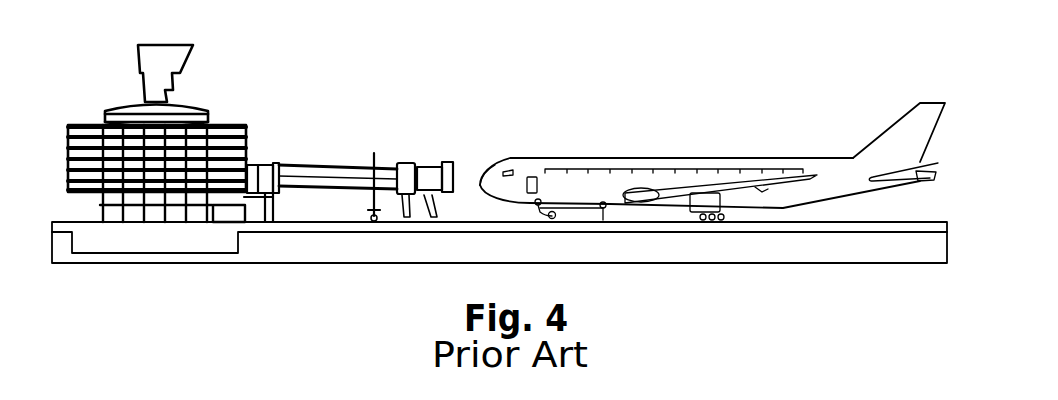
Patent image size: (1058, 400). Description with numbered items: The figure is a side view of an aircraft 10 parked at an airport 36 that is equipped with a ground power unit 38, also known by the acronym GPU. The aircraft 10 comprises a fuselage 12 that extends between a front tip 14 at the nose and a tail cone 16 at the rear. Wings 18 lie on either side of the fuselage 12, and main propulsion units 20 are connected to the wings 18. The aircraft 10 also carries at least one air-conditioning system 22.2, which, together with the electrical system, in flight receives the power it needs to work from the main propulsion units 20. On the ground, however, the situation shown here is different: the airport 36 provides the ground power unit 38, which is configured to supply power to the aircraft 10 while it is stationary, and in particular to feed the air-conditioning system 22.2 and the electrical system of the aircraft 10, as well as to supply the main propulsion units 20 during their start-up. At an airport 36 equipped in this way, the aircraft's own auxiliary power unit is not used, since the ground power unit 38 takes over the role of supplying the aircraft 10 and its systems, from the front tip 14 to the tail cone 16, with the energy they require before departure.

The aircraft 10 is at (696, 176).
The fuselage 12 is at (627, 157).
The front tip 14 is at (480, 180).
The tail cone 16 is at (925, 190).
The wings 18 is at (750, 168).
The main propulsion units 20 is at (720, 202).
The air-conditioning system 22.2 is at (577, 165).
The airport 36 is at (302, 108).
The ground power unit 38 is at (440, 223).